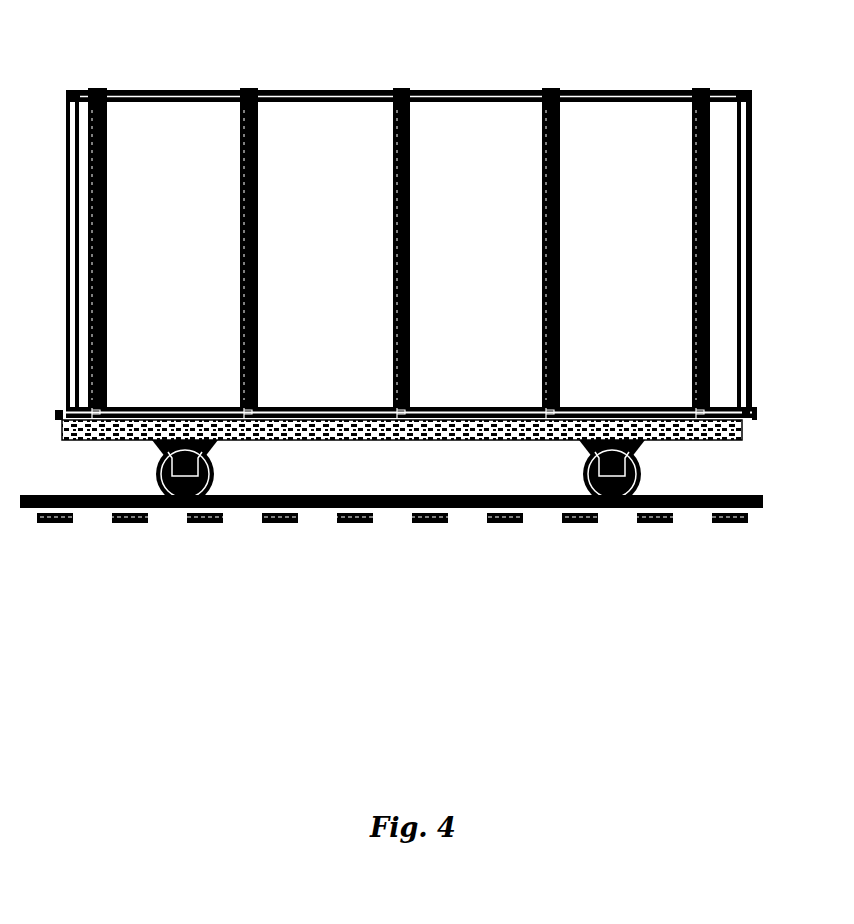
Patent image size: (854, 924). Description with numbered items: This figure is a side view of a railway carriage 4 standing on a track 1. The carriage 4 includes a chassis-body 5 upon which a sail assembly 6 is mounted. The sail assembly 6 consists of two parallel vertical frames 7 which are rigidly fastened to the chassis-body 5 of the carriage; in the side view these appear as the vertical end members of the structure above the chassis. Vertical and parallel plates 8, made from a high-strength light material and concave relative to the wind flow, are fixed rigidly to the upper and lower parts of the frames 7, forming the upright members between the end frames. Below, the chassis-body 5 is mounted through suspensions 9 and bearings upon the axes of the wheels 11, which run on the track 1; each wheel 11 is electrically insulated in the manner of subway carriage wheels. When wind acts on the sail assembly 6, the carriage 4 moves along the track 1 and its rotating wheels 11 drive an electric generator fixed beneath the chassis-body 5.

The track 1 is at (702, 512).
The carriage 4 is at (771, 357).
The chassis-body 5 is at (407, 432).
The sail assembly 6 is at (630, 90).
The vertical frames 7 is at (66, 110).
The plates 8 is at (258, 152).
The suspensions 9 is at (637, 448).
The wheels 11 is at (203, 468).